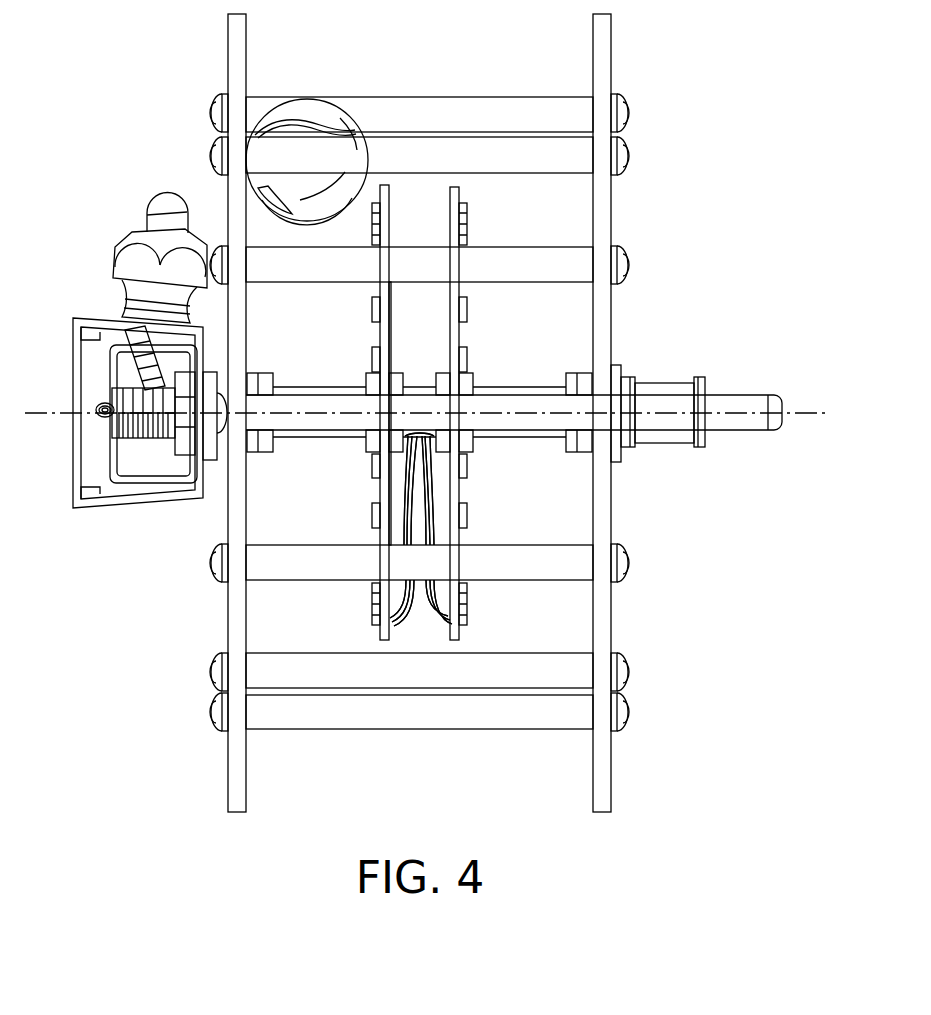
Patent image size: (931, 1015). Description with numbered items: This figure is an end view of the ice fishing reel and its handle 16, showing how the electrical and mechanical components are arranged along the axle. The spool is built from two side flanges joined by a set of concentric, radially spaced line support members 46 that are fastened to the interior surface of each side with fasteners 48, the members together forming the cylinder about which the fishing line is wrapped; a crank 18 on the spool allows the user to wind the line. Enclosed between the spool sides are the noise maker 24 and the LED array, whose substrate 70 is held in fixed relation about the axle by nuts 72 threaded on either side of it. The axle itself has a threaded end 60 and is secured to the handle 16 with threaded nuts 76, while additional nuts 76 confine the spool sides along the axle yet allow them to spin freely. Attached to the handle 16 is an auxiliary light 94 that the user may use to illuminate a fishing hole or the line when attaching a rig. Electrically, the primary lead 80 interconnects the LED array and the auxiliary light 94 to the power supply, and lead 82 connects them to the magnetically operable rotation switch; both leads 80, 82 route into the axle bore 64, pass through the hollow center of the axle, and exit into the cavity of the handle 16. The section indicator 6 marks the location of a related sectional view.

The handle 16 is at (140, 508).
The crank 18 is at (722, 430).
The noise maker 24 is at (305, 110).
The line support members 46 is at (373, 718).
The fasteners 48 is at (215, 713).
The threaded end of axle 60 is at (127, 427).
The axle bore 64 is at (383, 460).
The substrate 70 is at (384, 185).
The nuts 72 is at (442, 378).
The threaded nuts 76 is at (570, 382).
The primary electrical lead 80 is at (432, 527).
The electrical lead 82 is at (645, 578).
The auxiliary light 94 is at (160, 208).
The section line 6 is at (45, 430).